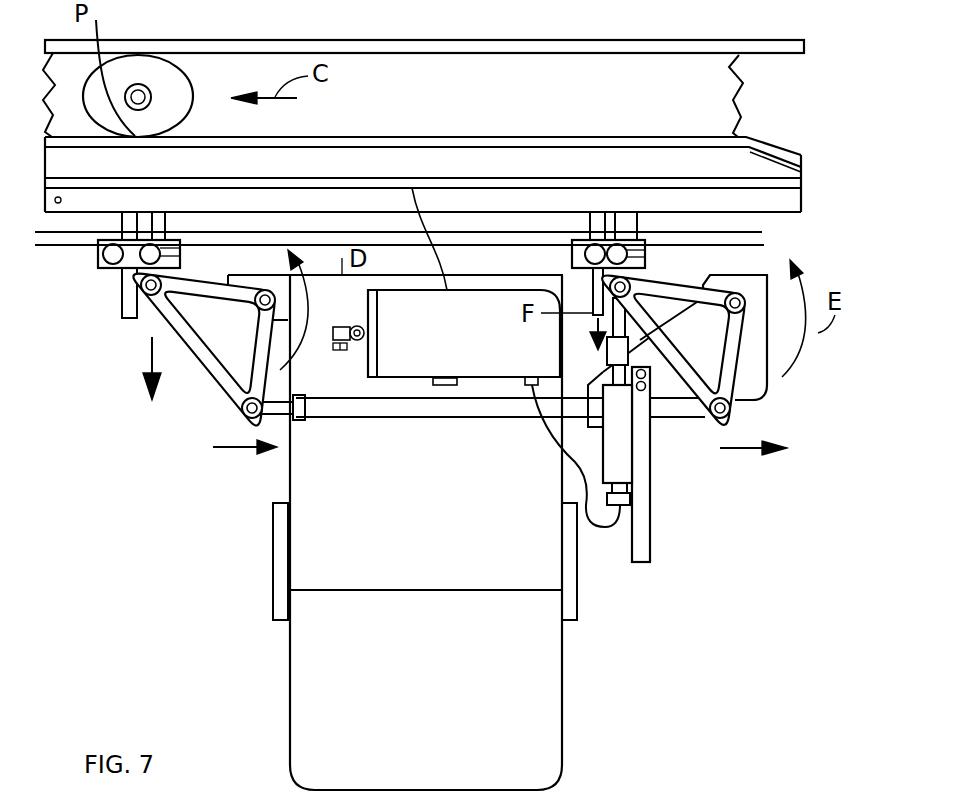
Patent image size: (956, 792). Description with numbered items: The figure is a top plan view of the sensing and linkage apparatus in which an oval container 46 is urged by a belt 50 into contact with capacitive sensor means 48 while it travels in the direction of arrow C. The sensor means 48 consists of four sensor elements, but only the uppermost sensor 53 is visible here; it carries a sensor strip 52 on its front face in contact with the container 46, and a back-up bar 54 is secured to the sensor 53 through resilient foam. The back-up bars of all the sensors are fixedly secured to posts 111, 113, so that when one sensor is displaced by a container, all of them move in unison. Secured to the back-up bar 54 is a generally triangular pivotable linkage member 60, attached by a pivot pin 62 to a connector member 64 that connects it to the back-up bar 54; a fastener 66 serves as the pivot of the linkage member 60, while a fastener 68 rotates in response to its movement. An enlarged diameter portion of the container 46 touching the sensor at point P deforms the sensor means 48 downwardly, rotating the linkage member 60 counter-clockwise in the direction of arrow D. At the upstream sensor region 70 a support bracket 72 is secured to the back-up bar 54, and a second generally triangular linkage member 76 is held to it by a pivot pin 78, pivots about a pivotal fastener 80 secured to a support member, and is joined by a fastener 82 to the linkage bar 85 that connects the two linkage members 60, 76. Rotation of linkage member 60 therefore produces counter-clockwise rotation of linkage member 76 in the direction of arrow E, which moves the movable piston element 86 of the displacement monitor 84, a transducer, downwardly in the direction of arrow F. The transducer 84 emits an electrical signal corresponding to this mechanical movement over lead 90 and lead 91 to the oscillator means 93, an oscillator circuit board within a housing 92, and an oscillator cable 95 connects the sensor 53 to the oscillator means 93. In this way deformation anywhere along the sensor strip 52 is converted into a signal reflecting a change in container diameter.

The oval container 46 is at (153, 67).
The belt 50 is at (363, 40).
The capacitive sensor means 48 is at (362, 134).
The sensor strip 52 is at (563, 136).
The sensor region 70 is at (625, 136).
The sensor 53 is at (751, 163).
The support bracket 72 is at (622, 220).
The post 113 is at (624, 250).
The post 111 is at (158, 252).
The oscillator cable 95 is at (430, 228).
The back-up bar 54 is at (780, 210).
The connector member 64 is at (107, 270).
The fastener 66 is at (263, 288).
The pivot pin 62 is at (147, 297).
The linkage member 60 is at (212, 398).
The fastener 68 is at (250, 420).
The oscillator means 93 is at (400, 355).
The linkage bar 85 is at (422, 407).
The lead 91 is at (545, 435).
The displacement monitor 84 is at (587, 467).
The movable element 86 is at (605, 350).
The pivot pin 78 is at (666, 258).
The pivotal fastener 80 is at (742, 322).
The linkage member 76 is at (752, 380).
The fastener 82 is at (723, 417).
The lead 90 is at (628, 515).
The lower housing 92 is at (430, 711).